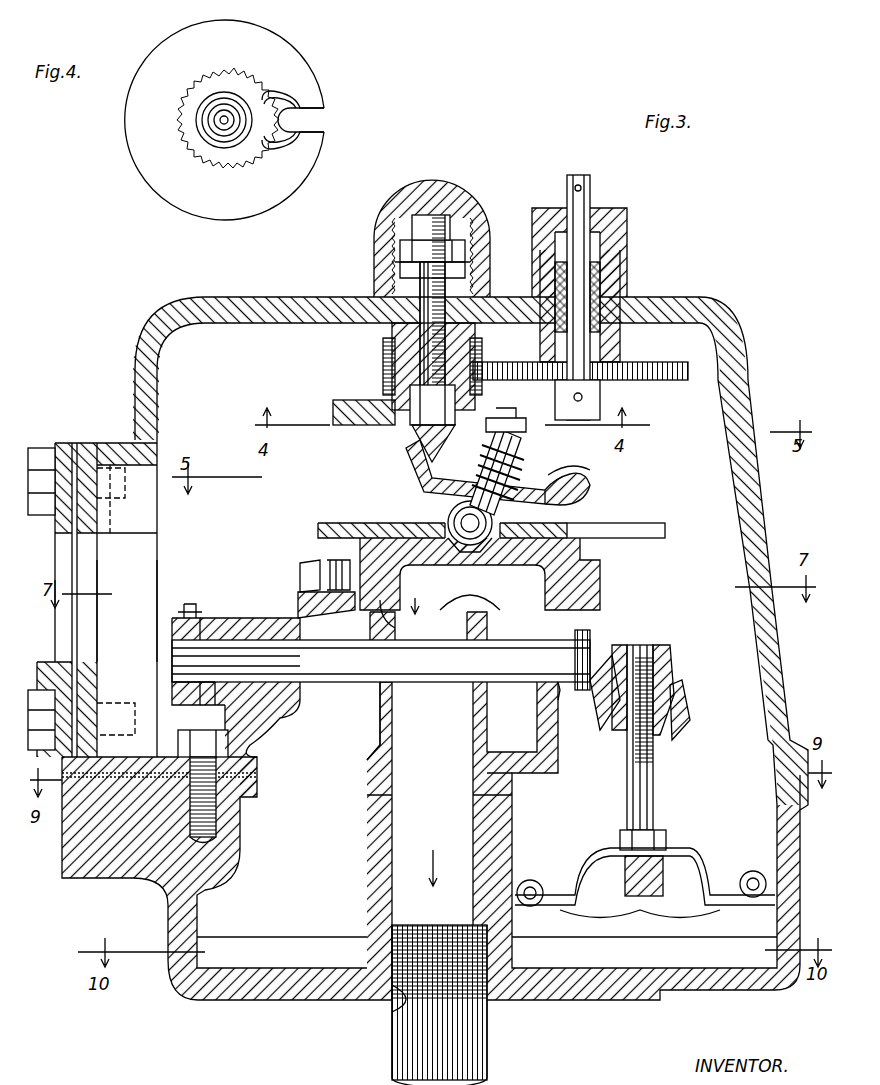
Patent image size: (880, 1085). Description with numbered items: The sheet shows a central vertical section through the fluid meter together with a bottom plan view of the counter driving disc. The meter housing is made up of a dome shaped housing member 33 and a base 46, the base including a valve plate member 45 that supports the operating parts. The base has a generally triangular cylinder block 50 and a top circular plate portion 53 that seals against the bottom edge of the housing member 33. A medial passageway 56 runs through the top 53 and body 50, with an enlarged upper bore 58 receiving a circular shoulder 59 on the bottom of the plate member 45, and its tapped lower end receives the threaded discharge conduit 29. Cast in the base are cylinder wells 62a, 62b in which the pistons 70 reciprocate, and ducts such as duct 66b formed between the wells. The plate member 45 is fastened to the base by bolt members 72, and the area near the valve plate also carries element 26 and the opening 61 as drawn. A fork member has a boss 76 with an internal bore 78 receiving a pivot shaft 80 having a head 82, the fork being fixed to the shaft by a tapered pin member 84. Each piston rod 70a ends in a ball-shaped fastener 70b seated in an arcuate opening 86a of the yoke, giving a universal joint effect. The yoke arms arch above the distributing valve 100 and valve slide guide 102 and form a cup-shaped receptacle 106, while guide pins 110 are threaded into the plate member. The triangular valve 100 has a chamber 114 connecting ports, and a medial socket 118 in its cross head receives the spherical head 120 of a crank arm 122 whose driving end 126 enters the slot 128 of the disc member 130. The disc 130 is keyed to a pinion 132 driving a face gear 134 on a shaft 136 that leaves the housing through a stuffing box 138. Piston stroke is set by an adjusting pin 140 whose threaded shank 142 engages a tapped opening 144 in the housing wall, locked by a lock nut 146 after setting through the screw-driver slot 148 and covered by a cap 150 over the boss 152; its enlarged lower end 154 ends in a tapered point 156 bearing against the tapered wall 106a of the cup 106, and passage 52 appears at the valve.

In FIG. 3, the mounting plate 26 is at (62, 594).
In FIG. 3, the discharge conduit 29 is at (488, 1048).
In FIG. 3, the housing member 33 is at (740, 388).
In FIG. 3, the valve plate member 45 is at (556, 744).
In FIG. 3, the base 46 is at (784, 852).
In FIG. 3, the main body portion or cylinder block 50 is at (186, 992).
In FIG. 3, the passage 52 is at (414, 597).
In FIG. 3, the top circular plate portion 53 is at (258, 776).
In FIG. 3, the medial passageway 56 is at (432, 803).
In FIG. 3, the enlarged upper bore 58 is at (508, 797).
In FIG. 3, the circular shoulder 59 is at (395, 781).
In FIG. 3, the bottom opening 61 is at (392, 1010).
In FIG. 3, the cylinder well 62a is at (644, 952).
In FIG. 3, the cylinder well 62b is at (282, 950).
In FIG. 3, the duct 66b is at (277, 827).
In FIG. 3, the piston 70 is at (684, 848).
In FIG. 3, the rod 70a is at (654, 800).
In FIG. 3, the ball-shaped fastener 70b is at (660, 660).
In FIG. 3, the bolt member 72 is at (204, 715).
In FIG. 3, the boss 76 is at (235, 626).
In FIG. 3, the internal bore 78 is at (200, 652).
In FIG. 3, the pivot shaft 80 is at (381, 661).
In FIG. 3, the head 82 is at (585, 636).
In FIG. 3, the tapered pin member 84 is at (172, 629).
In FIG. 3, the arcuate opening 86a is at (672, 704).
In FIG. 3, the distributing valve 100 is at (598, 572).
In FIG. 3, the valve slide guide 102 is at (318, 524).
In FIG. 3, the cup-shaped receptacle 106 is at (412, 470).
In FIG. 3, the tapered wall 106a is at (590, 486).
In FIG. 3, the valve slide guide pin 110 is at (600, 512).
In FIG. 3, the chamber 114 is at (475, 593).
In FIG. 3, the medial socket 118 is at (454, 544).
In FIG. 3, the spherical head 120 is at (450, 512).
In FIG. 3, the crank arm 122 is at (517, 438).
In FIG. 3, the driving end 126 is at (506, 408).
In FIG. 4, the slot 128 is at (305, 116).
In FIG. 4, the disc member 130 is at (175, 196).
In FIG. 3, the disc member 130 is at (333, 404).
In FIG. 4, the pinion 132 is at (228, 70).
In FIG. 3, the pinion 132 is at (395, 372).
In FIG. 3, the face gear 134 is at (645, 380).
In FIG. 3, the shaft 136 is at (590, 196).
In FIG. 3, the stuffing box 138 is at (600, 290).
In FIG. 3, the adjusting pin 140 is at (420, 347).
In FIG. 3, the threaded shank 142 is at (466, 272).
In FIG. 3, the tapped opening 144 is at (398, 272).
In FIG. 3, the lock nut 146 is at (465, 246).
In FIG. 3, the screw-driver slot 148 is at (448, 208).
In FIG. 3, the cap 150 is at (414, 190).
In FIG. 3, the boss 152 is at (396, 258).
In FIG. 3, the enlarged lower end 154 is at (432, 405).
In FIG. 4, the tapered point 156 is at (212, 112).
In FIG. 3, the tapered point 156 is at (415, 446).